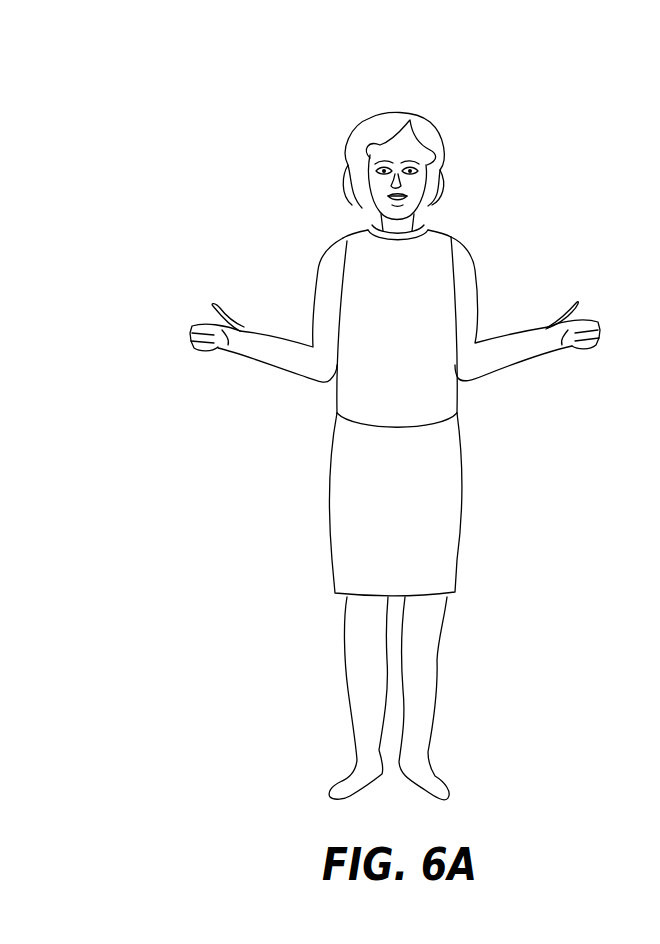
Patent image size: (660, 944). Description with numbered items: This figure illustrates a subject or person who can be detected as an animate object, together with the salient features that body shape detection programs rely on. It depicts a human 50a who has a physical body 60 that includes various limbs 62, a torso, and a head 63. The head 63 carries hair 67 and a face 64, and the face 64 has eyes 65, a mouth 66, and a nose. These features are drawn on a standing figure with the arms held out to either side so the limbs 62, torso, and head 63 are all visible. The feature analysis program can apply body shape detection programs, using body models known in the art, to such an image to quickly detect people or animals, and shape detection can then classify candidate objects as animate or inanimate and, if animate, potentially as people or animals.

The human 50a is at (232, 588).
The physical body 60 is at (480, 475).
The limbs 62 is at (443, 653).
The head 63 is at (405, 102).
The face 64 is at (403, 185).
The eyes 65 is at (378, 171).
The mouth 66 is at (406, 197).
The hair 67 is at (433, 157).